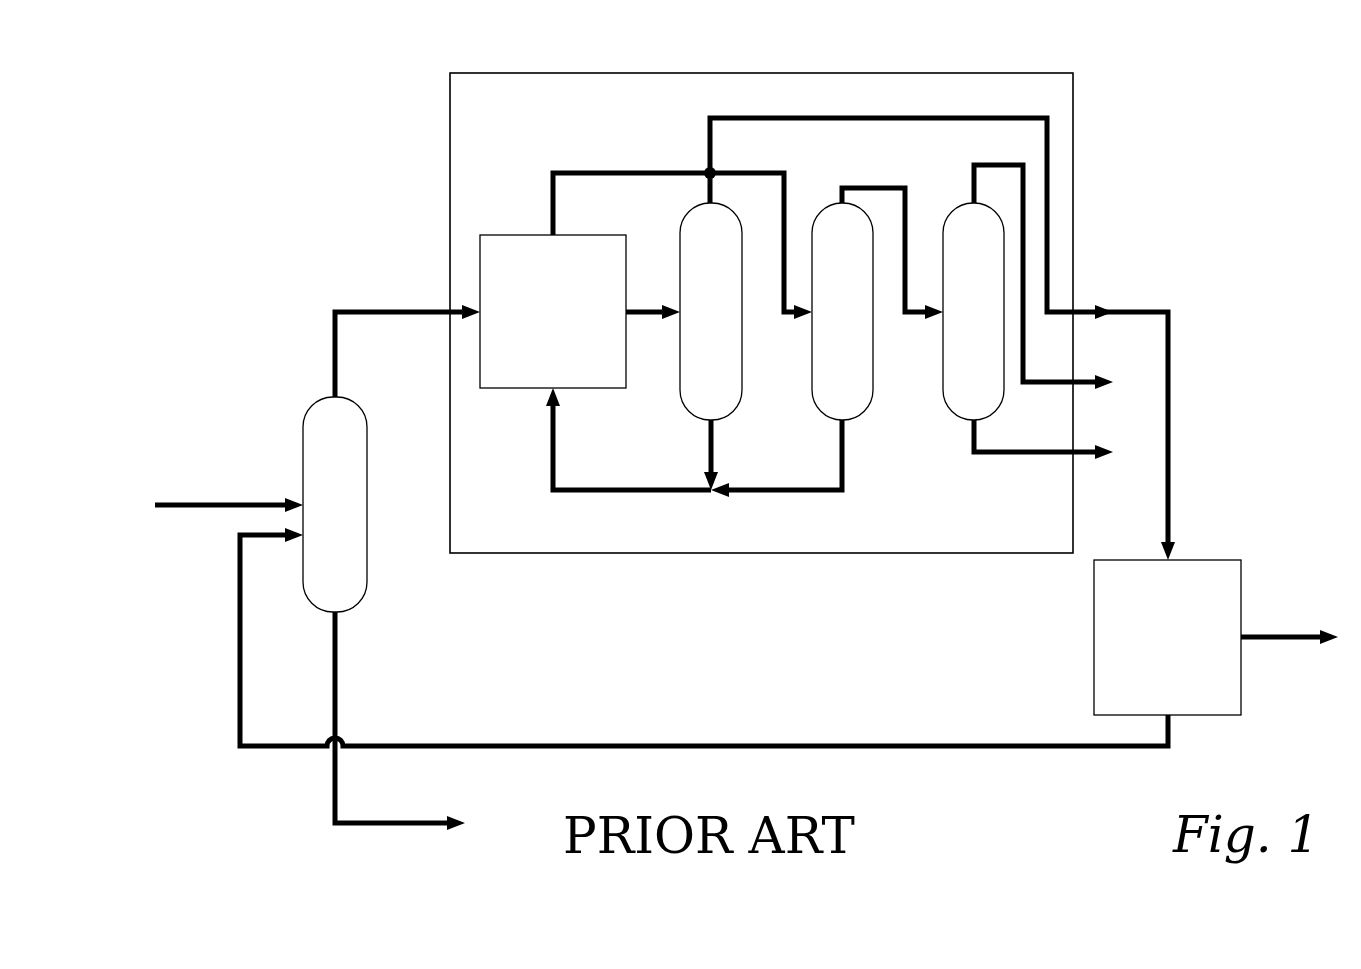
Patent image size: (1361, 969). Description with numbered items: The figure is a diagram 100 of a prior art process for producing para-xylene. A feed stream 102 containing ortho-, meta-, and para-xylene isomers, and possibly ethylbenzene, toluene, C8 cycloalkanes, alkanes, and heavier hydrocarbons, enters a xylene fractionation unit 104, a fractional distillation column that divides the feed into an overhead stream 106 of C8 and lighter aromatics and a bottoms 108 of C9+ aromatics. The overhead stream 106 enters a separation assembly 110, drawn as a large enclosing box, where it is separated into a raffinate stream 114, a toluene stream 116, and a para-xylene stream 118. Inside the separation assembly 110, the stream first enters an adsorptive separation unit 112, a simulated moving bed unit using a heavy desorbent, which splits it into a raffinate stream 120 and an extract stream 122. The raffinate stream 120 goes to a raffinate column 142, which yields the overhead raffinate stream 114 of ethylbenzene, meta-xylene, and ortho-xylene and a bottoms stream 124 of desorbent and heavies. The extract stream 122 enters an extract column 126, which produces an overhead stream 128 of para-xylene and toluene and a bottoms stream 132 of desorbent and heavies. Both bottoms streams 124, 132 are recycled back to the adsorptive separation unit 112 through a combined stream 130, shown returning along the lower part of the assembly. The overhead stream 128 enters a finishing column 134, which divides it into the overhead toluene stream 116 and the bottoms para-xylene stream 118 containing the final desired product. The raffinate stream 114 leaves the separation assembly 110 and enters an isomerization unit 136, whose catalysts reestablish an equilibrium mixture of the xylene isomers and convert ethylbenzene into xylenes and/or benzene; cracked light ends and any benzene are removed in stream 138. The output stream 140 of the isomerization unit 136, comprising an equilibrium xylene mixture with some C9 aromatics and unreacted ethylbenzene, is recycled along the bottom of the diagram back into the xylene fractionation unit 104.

The diagram 100 is at (225, 75).
The feed stream 102 is at (210, 505).
The xylene fractionation unit 104 is at (335, 504).
The overhead stream 106 is at (393, 312).
The bottoms 108 is at (430, 826).
The separation assembly 110 is at (450, 187).
The adsorptive separation unit 112 is at (553, 311).
The raffinate stream 114 is at (1050, 235).
The toluene stream 116 is at (1048, 382).
The para-xylene stream 118 is at (990, 450).
The raffinate stream 120 is at (660, 308).
The extract stream 122 is at (640, 173).
The bottoms stream 124 is at (705, 440).
The extract column 126 is at (842, 311).
The overhead stream 128 is at (873, 188).
The combined stream 130 is at (637, 490).
The bottoms stream 132 is at (810, 490).
The finishing column 134 is at (973, 311).
The isomerization unit 136 is at (1167, 637).
The stream 138 is at (1270, 637).
The output stream 140 is at (870, 745).
The raffinate column 142 is at (711, 311).